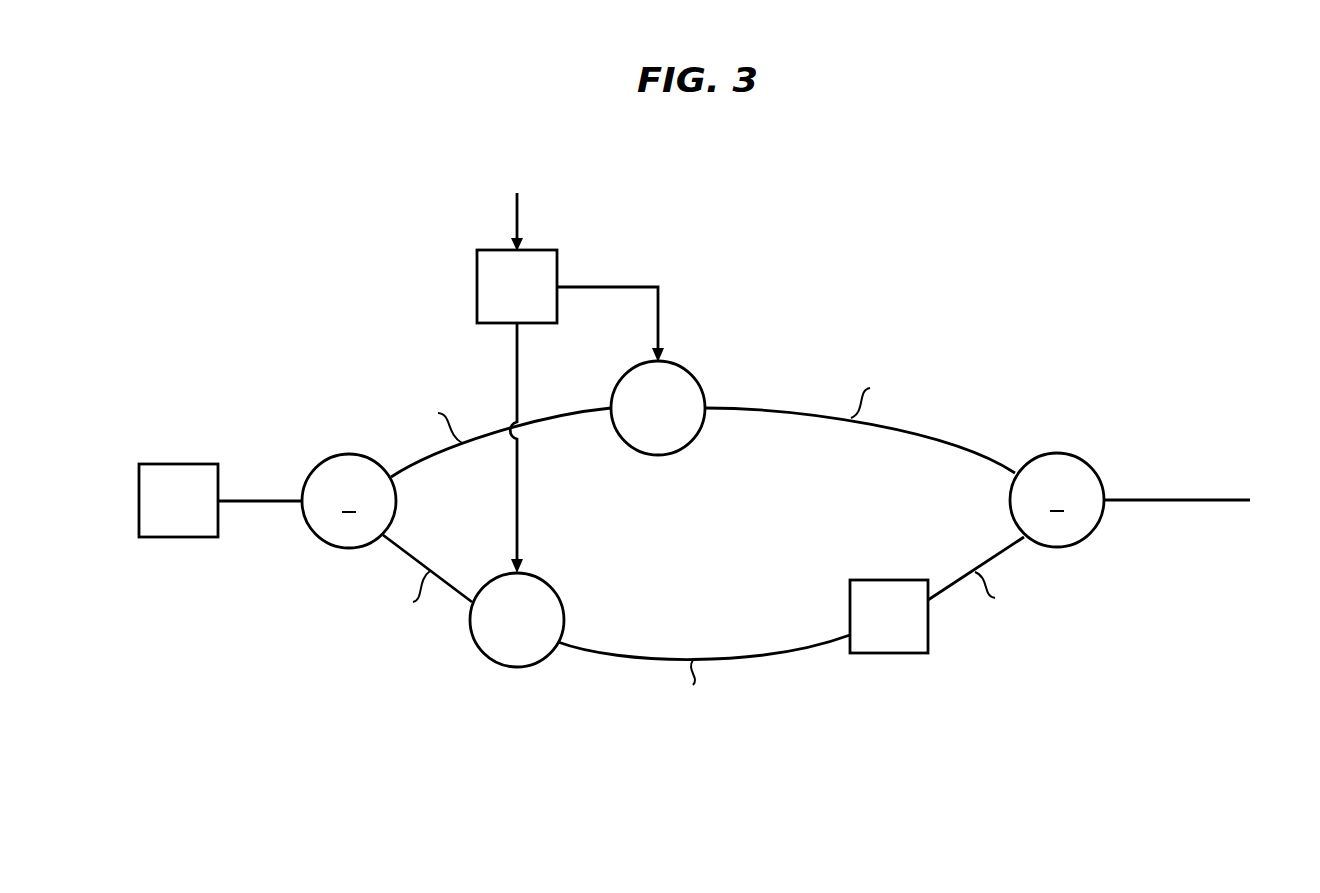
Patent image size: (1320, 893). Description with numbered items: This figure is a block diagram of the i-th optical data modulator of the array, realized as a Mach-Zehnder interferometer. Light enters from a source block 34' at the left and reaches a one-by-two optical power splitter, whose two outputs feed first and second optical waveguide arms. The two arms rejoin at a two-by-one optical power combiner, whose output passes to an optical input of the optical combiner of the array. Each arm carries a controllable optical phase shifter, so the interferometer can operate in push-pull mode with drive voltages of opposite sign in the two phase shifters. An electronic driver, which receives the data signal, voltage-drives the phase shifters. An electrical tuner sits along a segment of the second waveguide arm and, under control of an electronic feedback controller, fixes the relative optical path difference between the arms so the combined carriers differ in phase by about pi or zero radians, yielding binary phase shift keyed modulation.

The source 34' is at (220, 500).